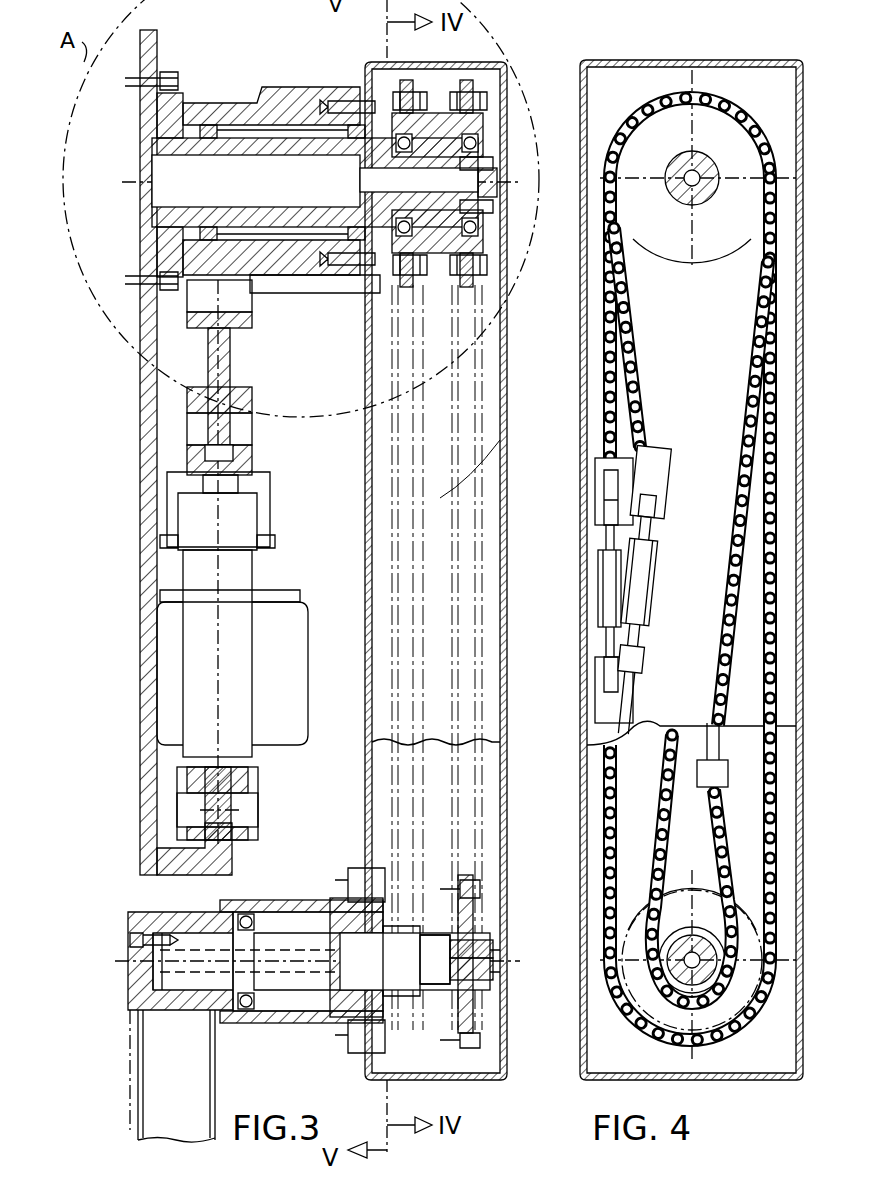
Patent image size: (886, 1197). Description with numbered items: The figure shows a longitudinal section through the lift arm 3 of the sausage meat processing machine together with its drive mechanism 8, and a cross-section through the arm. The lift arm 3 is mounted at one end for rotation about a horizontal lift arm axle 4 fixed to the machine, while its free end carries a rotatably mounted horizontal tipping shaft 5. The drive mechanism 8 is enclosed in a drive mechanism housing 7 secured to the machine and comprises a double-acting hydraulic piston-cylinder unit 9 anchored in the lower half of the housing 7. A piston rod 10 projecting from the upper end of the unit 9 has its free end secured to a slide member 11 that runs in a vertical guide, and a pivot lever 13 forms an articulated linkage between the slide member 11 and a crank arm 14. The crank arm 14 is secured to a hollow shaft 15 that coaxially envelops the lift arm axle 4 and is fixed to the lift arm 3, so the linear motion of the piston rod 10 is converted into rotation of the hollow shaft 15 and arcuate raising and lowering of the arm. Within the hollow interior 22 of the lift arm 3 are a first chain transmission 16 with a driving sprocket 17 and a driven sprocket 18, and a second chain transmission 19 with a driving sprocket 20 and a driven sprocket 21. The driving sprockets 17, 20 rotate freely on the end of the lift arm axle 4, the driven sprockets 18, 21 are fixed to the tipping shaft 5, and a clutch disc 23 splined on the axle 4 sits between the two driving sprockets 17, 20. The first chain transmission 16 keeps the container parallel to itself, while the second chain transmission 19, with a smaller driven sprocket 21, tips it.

In FIG. 3, the lift arm 3 is at (507, 73).
In FIG. 4, the lift arm 3 is at (790, 1075).
In FIG. 3, the lift arm axle 4 is at (183, 142).
In FIG. 3, the tipping shaft 5 is at (128, 985).
In FIG. 4, the tipping shaft 5 is at (660, 1000).
In FIG. 3, the drive mechanism housing 7 is at (140, 850).
In FIG. 3, the drive mechanism 8 is at (440, 498).
In FIG. 3, the double-acting hydraulic piston-cylinder unit 9 is at (177, 650).
In FIG. 3, the piston rod 10 is at (210, 485).
In FIG. 3, the slide member 11 is at (190, 455).
In FIG. 3, the pivot lever 13 is at (190, 395).
In FIG. 3, the crank arm 14 is at (205, 350).
In FIG. 3, the hollow shaft 15 is at (283, 108).
In FIG. 3, the first chain transmission 16 is at (455, 540).
In FIG. 4, the first chain transmission 16 is at (768, 518).
In FIG. 3, the driving sprocket 17 is at (473, 120).
In FIG. 3, the driven sprocket 18 is at (465, 895).
In FIG. 4, the driven sprocket 18 is at (690, 897).
In FIG. 3, the second chain transmission 19 is at (455, 615).
In FIG. 4, the second chain transmission 19 is at (723, 578).
In FIG. 3, the driving sprocket 20 is at (390, 97).
In FIG. 4, the driving sprocket 20 is at (720, 140).
In FIG. 3, the driven sprocket 21 is at (470, 930).
In FIG. 4, the driven sprocket 21 is at (647, 980).
In FIG. 3, the hollow interior 22 is at (290, 540).
In FIG. 4, the hollow interior 22 is at (715, 358).
In FIG. 3, the clutch disc 23 is at (455, 140).